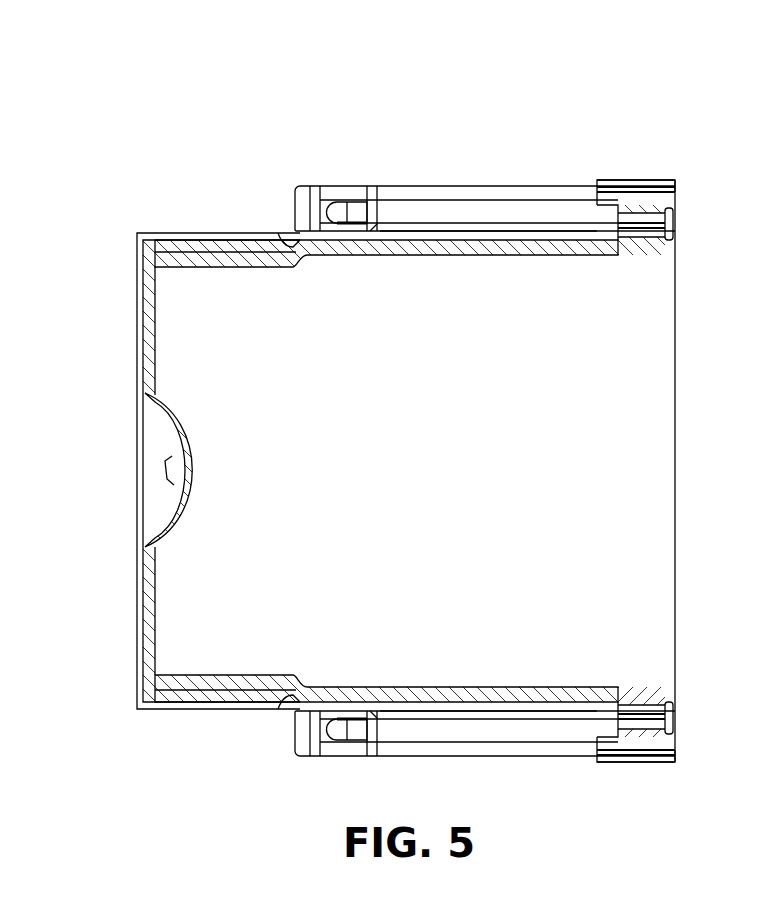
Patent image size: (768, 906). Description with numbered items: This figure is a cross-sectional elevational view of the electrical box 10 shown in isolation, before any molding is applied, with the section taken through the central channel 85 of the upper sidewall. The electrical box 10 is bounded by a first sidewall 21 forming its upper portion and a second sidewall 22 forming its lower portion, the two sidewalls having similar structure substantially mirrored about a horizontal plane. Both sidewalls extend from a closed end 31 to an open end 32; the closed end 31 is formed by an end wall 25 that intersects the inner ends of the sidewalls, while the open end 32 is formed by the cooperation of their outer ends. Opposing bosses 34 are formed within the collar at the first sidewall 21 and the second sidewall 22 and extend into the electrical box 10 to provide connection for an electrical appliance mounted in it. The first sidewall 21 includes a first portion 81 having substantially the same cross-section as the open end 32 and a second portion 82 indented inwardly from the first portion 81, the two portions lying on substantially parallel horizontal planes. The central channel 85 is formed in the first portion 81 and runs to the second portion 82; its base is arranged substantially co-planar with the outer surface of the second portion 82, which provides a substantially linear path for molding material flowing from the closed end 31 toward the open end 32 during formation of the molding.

The electrical box 10 is at (115, 152).
The first sidewall 21 is at (492, 255).
The second sidewall 22 is at (505, 688).
The end wall 25 is at (143, 323).
The closed end 31 is at (137, 385).
The open end 32 is at (678, 343).
The boss 34 is at (678, 210).
The first portion 81 is at (558, 183).
The second portion 82 is at (197, 250).
The central channel 85 is at (467, 230).